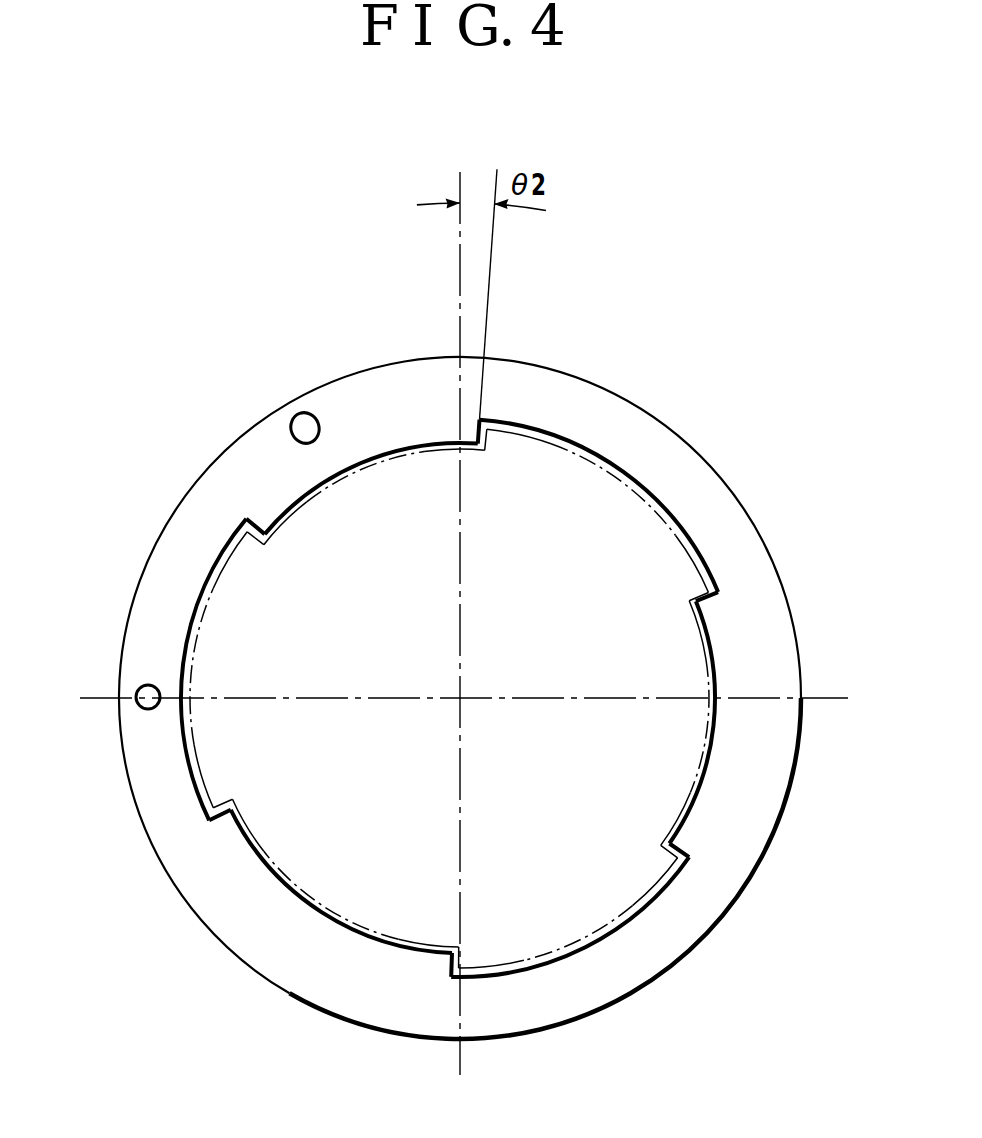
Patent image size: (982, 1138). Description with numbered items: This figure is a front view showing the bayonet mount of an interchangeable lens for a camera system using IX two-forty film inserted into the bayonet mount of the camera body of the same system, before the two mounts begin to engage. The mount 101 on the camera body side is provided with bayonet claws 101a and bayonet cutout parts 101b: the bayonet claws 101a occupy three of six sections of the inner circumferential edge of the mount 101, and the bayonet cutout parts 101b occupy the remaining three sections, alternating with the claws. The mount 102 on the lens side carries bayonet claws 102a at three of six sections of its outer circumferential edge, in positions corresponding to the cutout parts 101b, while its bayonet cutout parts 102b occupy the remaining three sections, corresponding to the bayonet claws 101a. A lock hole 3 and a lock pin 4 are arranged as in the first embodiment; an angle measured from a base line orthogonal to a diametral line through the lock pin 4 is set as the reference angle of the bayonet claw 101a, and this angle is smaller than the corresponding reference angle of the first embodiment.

The mount of the camera body 101 is at (628, 420).
The bayonet claws 101a is at (390, 450).
The bayonet cutout parts 101b is at (210, 572).
The mount of the interchangeable lens 102 is at (300, 553).
The bayonet claws 102a is at (197, 780).
The bayonet cutout parts 102b is at (437, 447).
The lock hole 3 is at (299, 410).
The lock pin 4 is at (140, 693).